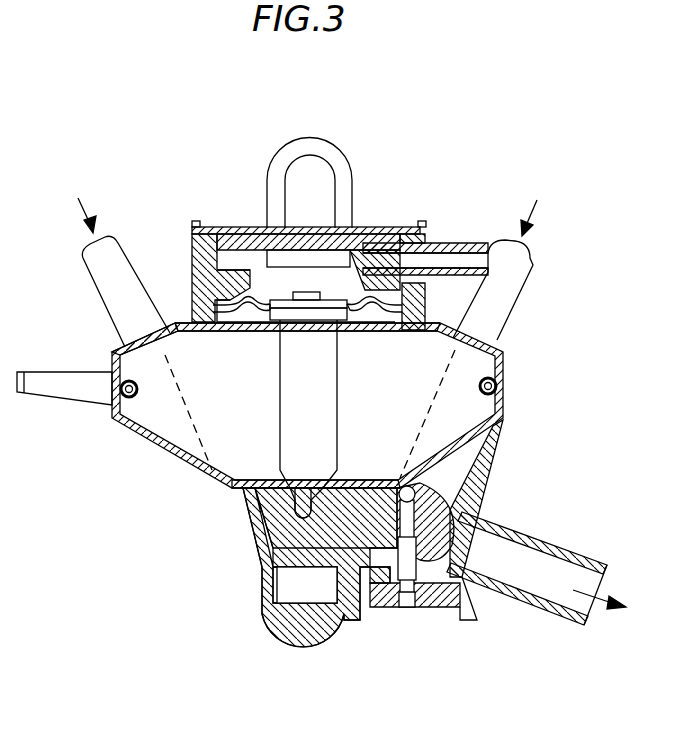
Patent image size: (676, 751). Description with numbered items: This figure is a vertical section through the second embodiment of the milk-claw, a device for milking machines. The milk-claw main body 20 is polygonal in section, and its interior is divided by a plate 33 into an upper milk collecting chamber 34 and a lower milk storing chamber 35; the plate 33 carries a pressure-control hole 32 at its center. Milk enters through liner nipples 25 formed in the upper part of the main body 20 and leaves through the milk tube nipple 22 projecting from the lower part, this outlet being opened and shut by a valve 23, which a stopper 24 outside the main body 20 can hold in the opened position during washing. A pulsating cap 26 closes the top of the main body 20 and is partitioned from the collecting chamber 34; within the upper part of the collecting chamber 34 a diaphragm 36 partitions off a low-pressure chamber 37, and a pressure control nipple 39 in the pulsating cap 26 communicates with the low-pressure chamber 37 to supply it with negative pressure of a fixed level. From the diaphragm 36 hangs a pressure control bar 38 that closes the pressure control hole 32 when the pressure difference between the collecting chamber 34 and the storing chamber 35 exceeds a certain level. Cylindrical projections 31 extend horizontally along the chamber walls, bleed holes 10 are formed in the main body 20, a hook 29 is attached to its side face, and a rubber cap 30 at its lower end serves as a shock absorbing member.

The bleed holes 10 is at (147, 343).
The milk-claw main body 20 is at (510, 401).
The milk tube nipple 22 is at (530, 537).
The valve 23 is at (424, 478).
The stopper 24 is at (383, 608).
The liner nipples 25 is at (98, 282).
The pulsating cap 26 is at (381, 228).
The hook 29 is at (55, 395).
The rubber cap 30 is at (312, 643).
The cylindrical projections 31 is at (139, 390).
The pressure-control hole 32 is at (327, 489).
The plate 33 is at (363, 481).
The milk collecting chamber 34 is at (240, 414).
The milk storing chamber 35 is at (302, 535).
The diaphragm 36 is at (254, 308).
The low-pressure chamber 37 is at (368, 303).
The pressure control bar 38 is at (283, 430).
The pressure control nipple 39 is at (455, 243).